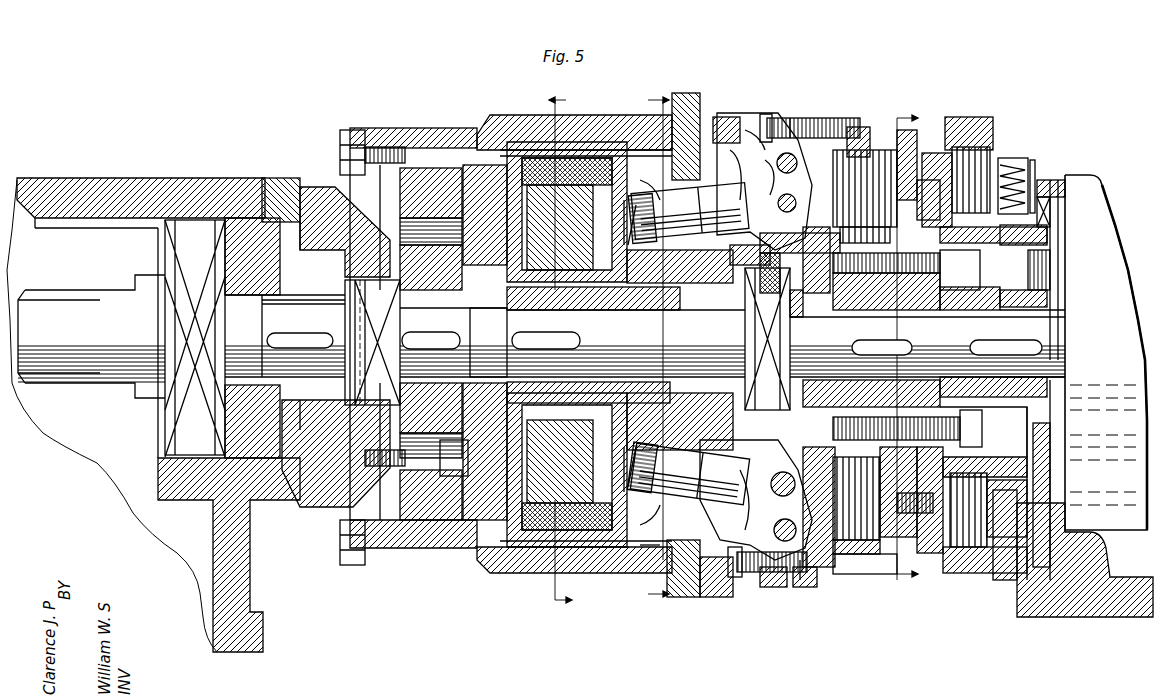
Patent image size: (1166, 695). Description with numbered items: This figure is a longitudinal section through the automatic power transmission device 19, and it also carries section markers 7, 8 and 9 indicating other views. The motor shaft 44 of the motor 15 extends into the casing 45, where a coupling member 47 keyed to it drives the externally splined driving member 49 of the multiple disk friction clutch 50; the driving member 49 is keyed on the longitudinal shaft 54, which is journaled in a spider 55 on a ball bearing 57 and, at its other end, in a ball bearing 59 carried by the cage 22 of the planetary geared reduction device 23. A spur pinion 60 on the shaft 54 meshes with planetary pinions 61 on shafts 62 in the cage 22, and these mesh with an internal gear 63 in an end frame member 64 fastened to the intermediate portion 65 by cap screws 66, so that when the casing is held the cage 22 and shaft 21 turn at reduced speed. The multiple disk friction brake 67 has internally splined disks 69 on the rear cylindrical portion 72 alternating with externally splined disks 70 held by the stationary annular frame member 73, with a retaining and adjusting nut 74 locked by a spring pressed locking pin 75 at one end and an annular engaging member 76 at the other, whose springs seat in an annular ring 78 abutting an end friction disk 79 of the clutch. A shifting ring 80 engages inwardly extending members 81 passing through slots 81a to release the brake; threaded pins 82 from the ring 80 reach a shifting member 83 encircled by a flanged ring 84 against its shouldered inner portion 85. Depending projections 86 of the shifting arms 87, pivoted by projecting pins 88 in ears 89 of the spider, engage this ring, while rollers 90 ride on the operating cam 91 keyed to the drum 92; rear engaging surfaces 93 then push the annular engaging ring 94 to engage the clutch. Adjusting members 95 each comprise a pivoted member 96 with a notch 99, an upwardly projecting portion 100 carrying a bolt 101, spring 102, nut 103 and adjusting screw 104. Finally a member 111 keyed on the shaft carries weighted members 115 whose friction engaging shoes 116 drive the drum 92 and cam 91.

The section line 7- 7 is at (913, 347).
The section line 8- 8 is at (566, 350).
The section line 9- 9 is at (652, 346).
The motor 15 is at (1125, 522).
The transmission device 19 is at (532, 108).
The shaft 21 is at (105, 290).
The cage 22 is at (330, 500).
The planetary geared reduction device 23 is at (350, 207).
The motor shaft 44 is at (1040, 322).
The casing 45 is at (612, 115).
The coupling member 47 is at (1050, 403).
The driving member 49 is at (905, 560).
The friction clutch 50 is at (855, 555).
The shaft 54 is at (352, 311).
The spider 55 is at (733, 580).
The ball bearing 57 is at (743, 323).
The ball bearing 59 is at (418, 312).
The spur pinion 60 is at (478, 365).
The planetary pinions 61 is at (345, 163).
The shafts 62 is at (425, 178).
The internal gear 63 is at (408, 550).
The end frame member 64 is at (448, 548).
The intermediate portion 65 is at (530, 575).
The cap screws 66 is at (345, 130).
The friction brake 67 is at (1000, 600).
The clutch disks 69 is at (1005, 170).
The clutch disks 70 is at (1000, 160).
The rear cylindrical portion 72 is at (1050, 425).
The stationary annular frame member 73 is at (968, 118).
The retaining and adjusting nut 74 is at (1010, 600).
The spring pressed locking pin 75 is at (1015, 180).
The annular engaging member 76 is at (950, 150).
The annular ring 78 is at (905, 130).
The end friction disk 79 is at (880, 150).
The shifting ring 80 is at (985, 457).
The inwardly extending members 81 is at (885, 275).
The slots 81a is at (935, 150).
The threaded pins 82 is at (852, 315).
The shifting member 83 is at (810, 315).
The flanged ring 84 is at (790, 320).
The shouldered inner portion 85 is at (750, 248).
The depending projections 86 is at (725, 200).
The shifting arms 87 is at (678, 183).
The projecting pins 88 is at (772, 186).
The ears 89 is at (773, 586).
The rollers 90 is at (653, 505).
The operating cam 91 is at (662, 346).
The drum 92 is at (645, 545).
The rear engaging surfaces 93 is at (820, 135).
The annular engaging ring 94 is at (850, 128).
The adjusting members 95 is at (790, 118).
The pivoted member 96 is at (800, 125).
The notch 99 is at (760, 128).
The upwardly projecting portion 100 is at (772, 118).
The bolt 101 is at (783, 118).
The spring 102 is at (855, 120).
The nut 103 is at (860, 135).
The adjusting screw 104 is at (790, 560).
The member 111 is at (585, 322).
The weighted members 115 is at (560, 345).
The friction engaging shoes 116 is at (510, 158).